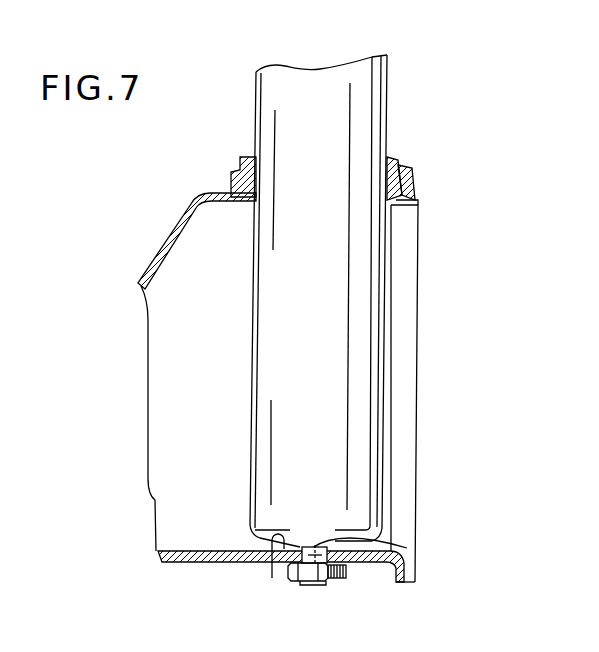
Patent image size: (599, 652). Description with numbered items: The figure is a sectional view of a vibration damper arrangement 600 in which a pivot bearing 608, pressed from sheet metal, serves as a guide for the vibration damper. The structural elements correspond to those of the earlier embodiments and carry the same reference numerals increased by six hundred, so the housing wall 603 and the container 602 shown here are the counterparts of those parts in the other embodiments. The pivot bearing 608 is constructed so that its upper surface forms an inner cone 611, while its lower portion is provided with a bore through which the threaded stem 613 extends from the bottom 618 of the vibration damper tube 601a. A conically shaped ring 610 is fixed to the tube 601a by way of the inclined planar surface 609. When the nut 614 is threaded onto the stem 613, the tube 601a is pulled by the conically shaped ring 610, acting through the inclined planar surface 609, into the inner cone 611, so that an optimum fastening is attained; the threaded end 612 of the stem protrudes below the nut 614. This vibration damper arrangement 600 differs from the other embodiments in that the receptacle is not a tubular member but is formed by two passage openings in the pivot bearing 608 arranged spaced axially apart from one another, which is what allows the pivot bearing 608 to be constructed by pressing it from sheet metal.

The vibration damper arrangement 600 is at (129, 223).
The vibration damper tube 601a is at (371, 381).
The cylindrical container 602 is at (253, 98).
The housing wall 603 is at (144, 268).
The pivot bearing 608 is at (197, 558).
The inclined planar surface 609 is at (409, 186).
The conically shaped ring 610 is at (391, 160).
The inner cone 611 is at (411, 170).
The threaded bolt end 612 is at (348, 575).
The threaded stem 613 is at (345, 552).
The nut 614 is at (337, 581).
The bottom 618 is at (275, 555).